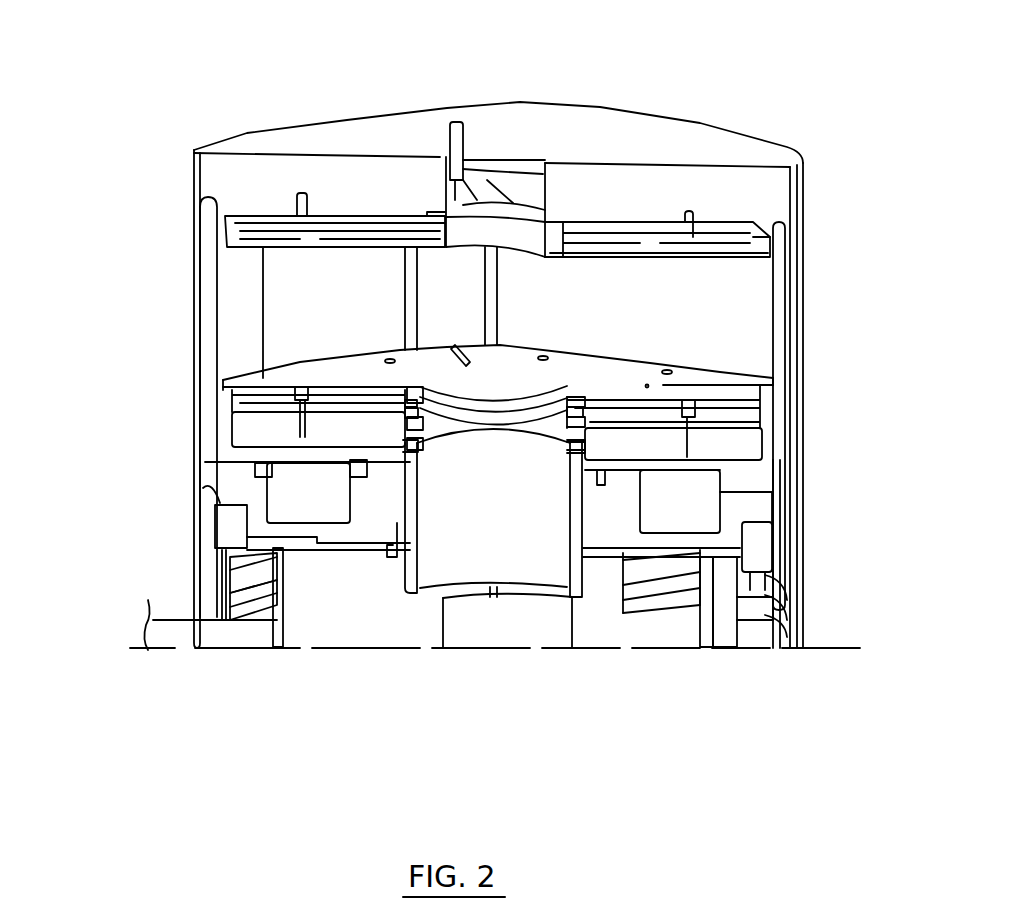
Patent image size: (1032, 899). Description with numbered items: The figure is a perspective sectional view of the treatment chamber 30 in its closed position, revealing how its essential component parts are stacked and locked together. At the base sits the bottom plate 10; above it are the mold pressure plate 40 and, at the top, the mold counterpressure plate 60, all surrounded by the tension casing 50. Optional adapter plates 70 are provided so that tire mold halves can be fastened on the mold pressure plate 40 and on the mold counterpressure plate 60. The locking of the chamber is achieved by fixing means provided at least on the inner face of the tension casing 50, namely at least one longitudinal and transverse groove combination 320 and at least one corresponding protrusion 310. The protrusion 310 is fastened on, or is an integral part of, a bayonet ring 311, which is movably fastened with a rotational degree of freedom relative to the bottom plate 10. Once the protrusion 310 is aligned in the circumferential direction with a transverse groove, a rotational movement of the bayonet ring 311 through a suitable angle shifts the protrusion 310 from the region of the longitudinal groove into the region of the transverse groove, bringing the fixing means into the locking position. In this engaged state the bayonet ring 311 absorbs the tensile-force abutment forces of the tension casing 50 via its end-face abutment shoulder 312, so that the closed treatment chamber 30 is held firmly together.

The bottom plate 10 is at (235, 487).
The treatment chamber 30 is at (590, 298).
The mold pressure plate 40 is at (725, 444).
The tension casing 50 is at (790, 282).
The mold counterpressure plate 60 is at (725, 190).
The adapter plate 70 is at (793, 215).
The protrusion 310 is at (770, 555).
The bayonet ring 311 is at (233, 542).
The end-face abutment shoulder 312 is at (240, 517).
The longitudinal and transverse groove combination 320 is at (773, 615).